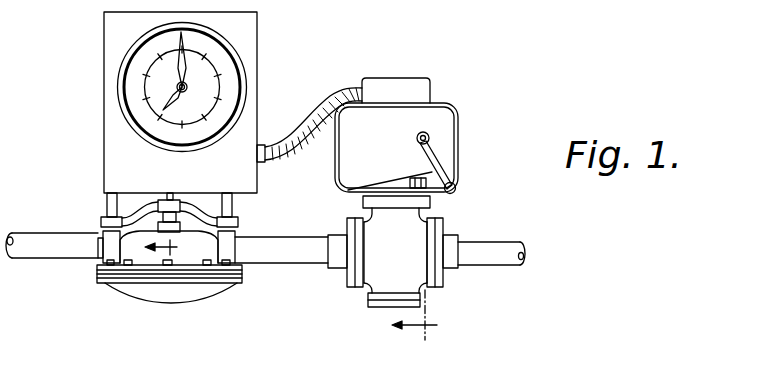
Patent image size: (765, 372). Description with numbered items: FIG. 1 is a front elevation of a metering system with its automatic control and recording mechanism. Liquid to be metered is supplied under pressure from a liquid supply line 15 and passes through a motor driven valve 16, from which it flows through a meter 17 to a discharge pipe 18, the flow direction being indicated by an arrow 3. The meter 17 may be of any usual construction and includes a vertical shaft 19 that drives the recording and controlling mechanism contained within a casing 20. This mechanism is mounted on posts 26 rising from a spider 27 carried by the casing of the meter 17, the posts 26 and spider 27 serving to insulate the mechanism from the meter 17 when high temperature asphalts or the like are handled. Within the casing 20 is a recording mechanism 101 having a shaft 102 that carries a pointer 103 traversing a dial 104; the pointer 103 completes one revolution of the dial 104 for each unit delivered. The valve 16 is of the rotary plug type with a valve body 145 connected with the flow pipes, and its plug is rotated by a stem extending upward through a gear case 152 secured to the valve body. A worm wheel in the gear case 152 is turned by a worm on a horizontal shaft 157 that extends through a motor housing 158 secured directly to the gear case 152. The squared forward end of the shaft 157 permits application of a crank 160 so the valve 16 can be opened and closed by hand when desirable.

The direction of flow arrow 3 is at (169, 248).
The liquid supply line 15 is at (505, 262).
The motor driven valve 16 is at (371, 314).
The meter 17 is at (181, 318).
The discharge pipe 18 is at (27, 253).
The vertical shaft 19 is at (207, 189).
The casing 20 is at (252, 30).
The posts 26 is at (106, 204).
The spider 27 is at (236, 222).
The recording mechanism 101 is at (102, 80).
The shaft 102 is at (143, 88).
The pointer 103 is at (190, 85).
The dial 104 is at (130, 123).
The valve body 145 is at (382, 277).
The gear case 152 is at (430, 180).
The horizontal shaft 157 is at (431, 135).
The motor housing 158 is at (339, 160).
The crank 160 is at (433, 152).